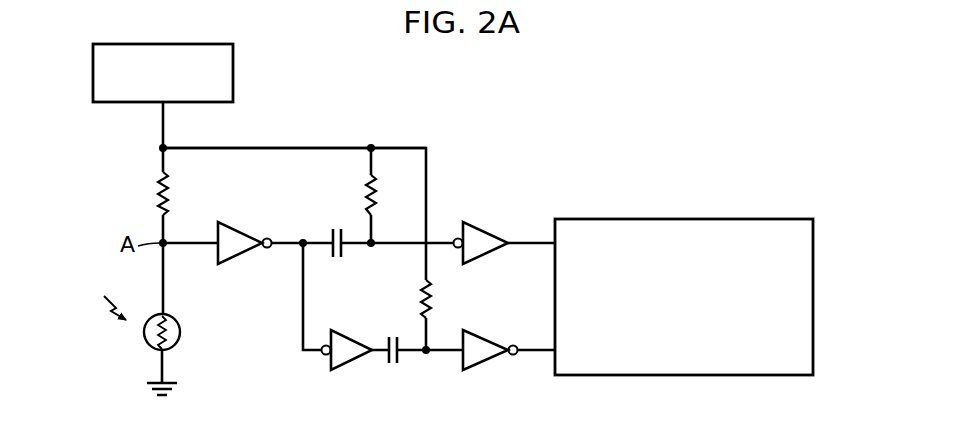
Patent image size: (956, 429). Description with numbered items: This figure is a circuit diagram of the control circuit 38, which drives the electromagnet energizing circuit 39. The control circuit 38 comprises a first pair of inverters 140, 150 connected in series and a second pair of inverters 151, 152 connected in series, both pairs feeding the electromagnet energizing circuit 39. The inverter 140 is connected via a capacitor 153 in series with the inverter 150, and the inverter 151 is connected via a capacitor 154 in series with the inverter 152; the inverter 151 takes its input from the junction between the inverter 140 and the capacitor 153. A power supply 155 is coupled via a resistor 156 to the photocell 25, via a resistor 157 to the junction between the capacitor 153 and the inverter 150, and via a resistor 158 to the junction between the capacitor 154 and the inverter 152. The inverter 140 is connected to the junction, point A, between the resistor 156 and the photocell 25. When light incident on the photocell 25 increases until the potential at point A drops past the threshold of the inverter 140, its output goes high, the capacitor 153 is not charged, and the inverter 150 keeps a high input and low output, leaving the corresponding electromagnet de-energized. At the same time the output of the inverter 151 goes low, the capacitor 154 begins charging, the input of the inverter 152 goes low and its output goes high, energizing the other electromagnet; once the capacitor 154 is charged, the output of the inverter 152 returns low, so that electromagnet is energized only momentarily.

The power supply 155 is at (229, 74).
The control circuit 38 is at (410, 136).
The resistor 156 is at (160, 195).
The first inverter 140 is at (245, 257).
The photocell 25 is at (180, 340).
The resistor 157 is at (368, 196).
The capacitor 153 is at (329, 233).
The second inverter 150 is at (481, 235).
The resistor 158 is at (430, 301).
The third inverter 151 is at (341, 360).
The capacitor 154 is at (398, 362).
The fourth inverter 152 is at (481, 362).
The electromagnet energizing circuit 39 is at (668, 222).